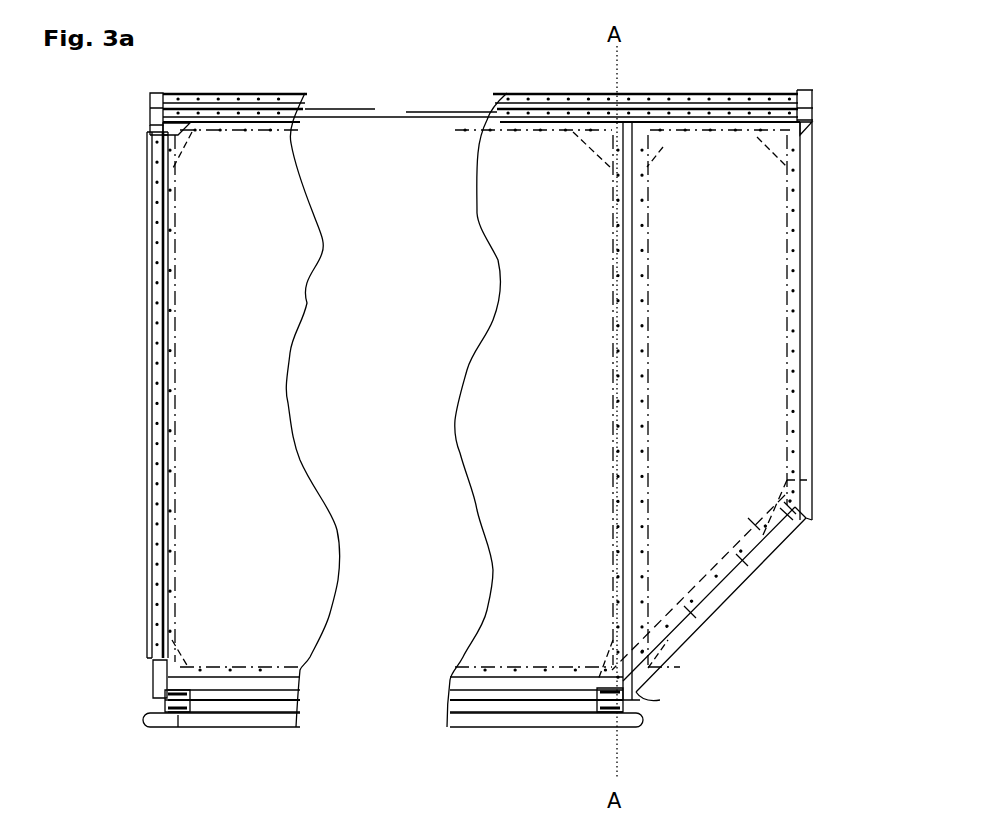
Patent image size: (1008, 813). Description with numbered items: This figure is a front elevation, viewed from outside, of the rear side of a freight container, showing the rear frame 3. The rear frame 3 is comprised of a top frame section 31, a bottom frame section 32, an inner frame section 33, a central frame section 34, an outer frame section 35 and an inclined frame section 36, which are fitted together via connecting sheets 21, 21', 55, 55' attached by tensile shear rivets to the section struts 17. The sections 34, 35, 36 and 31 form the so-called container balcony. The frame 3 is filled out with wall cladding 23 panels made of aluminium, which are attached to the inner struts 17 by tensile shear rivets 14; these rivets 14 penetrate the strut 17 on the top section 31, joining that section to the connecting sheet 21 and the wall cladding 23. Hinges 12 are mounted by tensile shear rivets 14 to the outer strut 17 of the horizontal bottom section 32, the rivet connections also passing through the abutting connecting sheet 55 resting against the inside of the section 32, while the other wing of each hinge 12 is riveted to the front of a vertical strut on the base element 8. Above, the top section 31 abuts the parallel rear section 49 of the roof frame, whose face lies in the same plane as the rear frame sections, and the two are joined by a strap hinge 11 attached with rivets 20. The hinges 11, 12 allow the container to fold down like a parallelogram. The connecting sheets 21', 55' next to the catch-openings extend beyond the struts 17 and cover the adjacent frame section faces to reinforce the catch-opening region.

The rear frame 3 is at (151, 468).
The base element 8 is at (460, 722).
The strap hinge 11 is at (158, 178).
The hinges 12 is at (165, 707).
The tensile shear rivets 14 is at (225, 130).
The section struts 17 is at (172, 318).
The rivets 20 is at (165, 246).
The connecting sheet 21 is at (520, 364).
The connecting sheet 21' is at (850, 520).
The wall cladding 23 is at (522, 390).
The top frame section 31 is at (481, 109).
The bottom frame section 32 is at (482, 683).
The inner frame section 33 is at (160, 133).
The central frame section 34 is at (632, 498).
The outer frame section 35 is at (800, 278).
The inclined frame section 36 is at (752, 573).
The rear section of the roof frame 49 is at (163, 100).
The connecting sheet 55 is at (122, 679).
The connecting sheet 55' is at (678, 663).